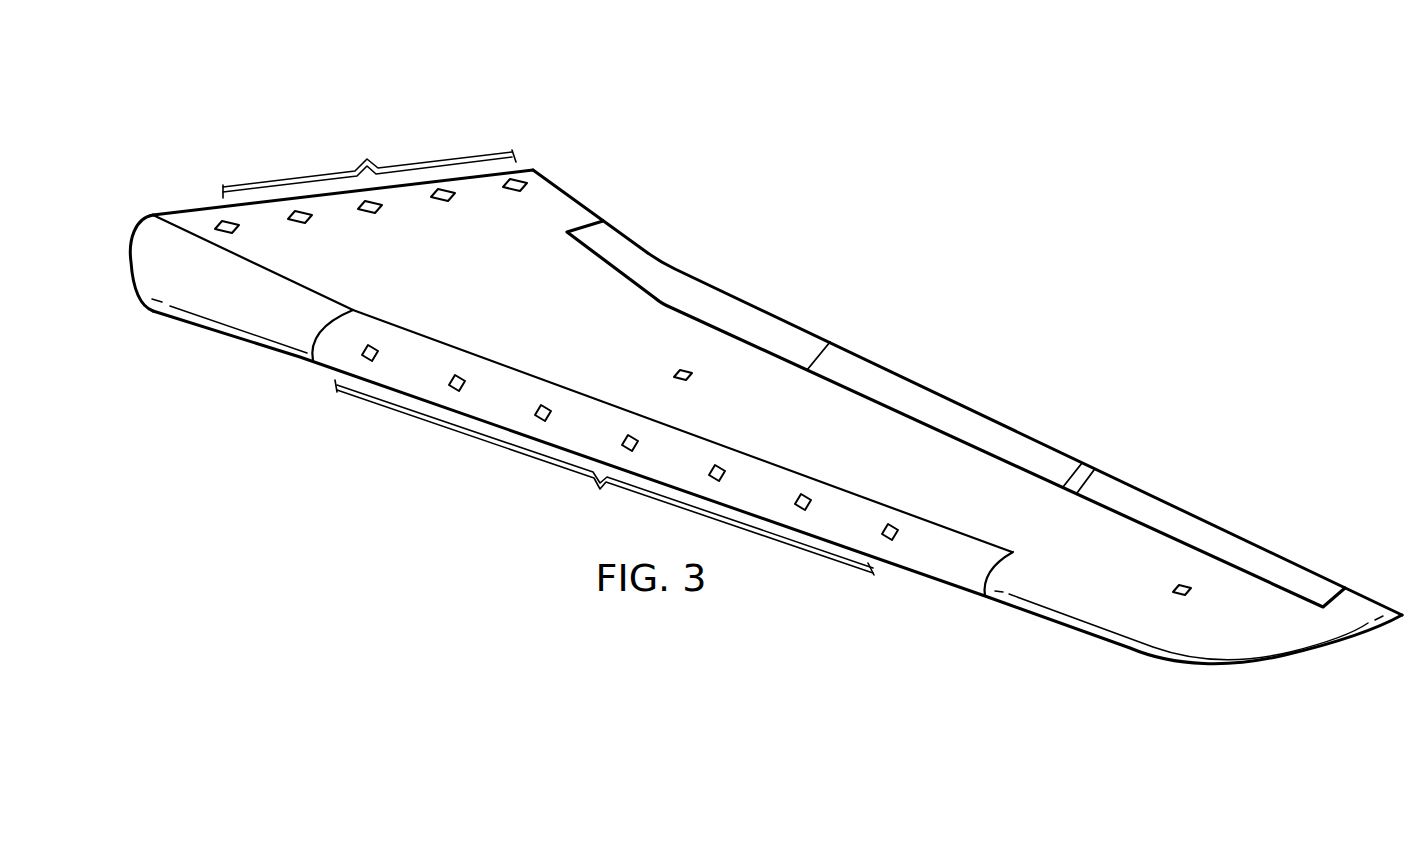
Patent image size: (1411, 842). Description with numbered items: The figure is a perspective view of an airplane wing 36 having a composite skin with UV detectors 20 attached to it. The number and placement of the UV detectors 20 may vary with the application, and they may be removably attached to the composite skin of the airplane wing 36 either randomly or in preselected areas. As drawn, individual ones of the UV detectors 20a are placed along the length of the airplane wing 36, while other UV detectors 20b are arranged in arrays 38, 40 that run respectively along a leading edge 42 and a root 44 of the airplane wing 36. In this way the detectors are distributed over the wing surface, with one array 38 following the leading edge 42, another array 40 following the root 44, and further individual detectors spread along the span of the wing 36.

The root 44 is at (283, 93).
The array 40 is at (369, 167).
The array 38 is at (604, 477).
The leading edge 42 is at (428, 352).
The airplane wing 36 is at (965, 393).
The UV detectors 20 is at (456, 194).
The UV detectors 20a is at (680, 372).
The UV detectors 20b is at (312, 219).